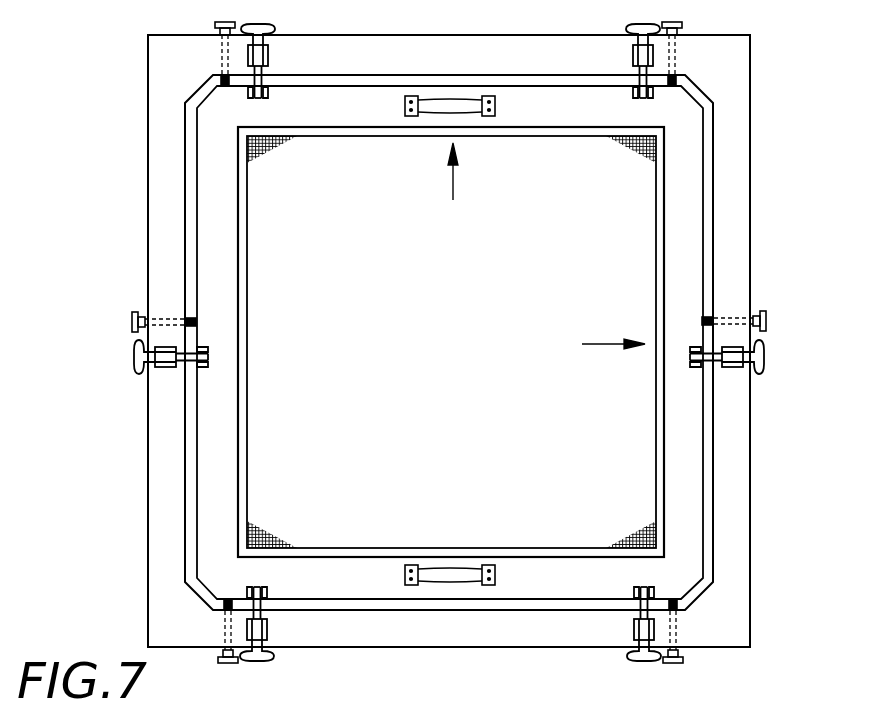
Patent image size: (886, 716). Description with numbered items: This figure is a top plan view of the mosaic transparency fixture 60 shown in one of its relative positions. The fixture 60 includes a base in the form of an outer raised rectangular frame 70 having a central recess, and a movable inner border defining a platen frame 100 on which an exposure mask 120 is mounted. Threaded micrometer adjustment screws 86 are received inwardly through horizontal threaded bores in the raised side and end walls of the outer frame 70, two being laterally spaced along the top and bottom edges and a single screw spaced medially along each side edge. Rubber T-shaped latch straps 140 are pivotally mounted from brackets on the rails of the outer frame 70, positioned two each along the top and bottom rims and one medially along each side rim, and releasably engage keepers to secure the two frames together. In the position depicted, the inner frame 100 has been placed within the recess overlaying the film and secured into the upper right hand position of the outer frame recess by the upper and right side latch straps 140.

The mosaic transparency fixture 60 is at (122, 153).
The outer raised rectangular frame 70 is at (750, 60).
The threaded micrometer adjustment screw 86 is at (766, 320).
The platen frame 100 is at (708, 122).
The exposure mask 120 is at (656, 178).
The T-shaped latch strap 140 is at (764, 352).